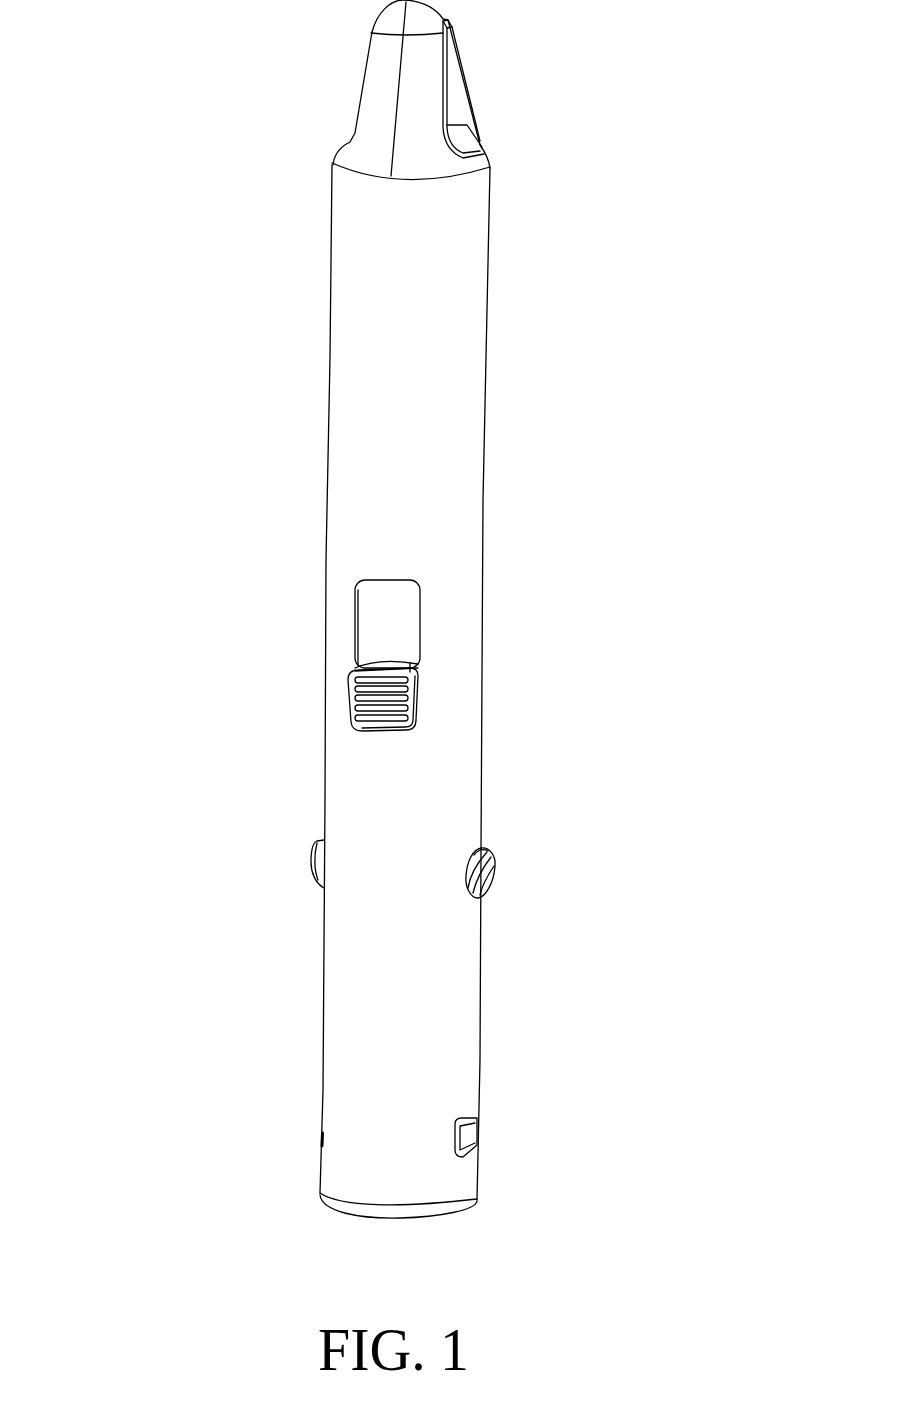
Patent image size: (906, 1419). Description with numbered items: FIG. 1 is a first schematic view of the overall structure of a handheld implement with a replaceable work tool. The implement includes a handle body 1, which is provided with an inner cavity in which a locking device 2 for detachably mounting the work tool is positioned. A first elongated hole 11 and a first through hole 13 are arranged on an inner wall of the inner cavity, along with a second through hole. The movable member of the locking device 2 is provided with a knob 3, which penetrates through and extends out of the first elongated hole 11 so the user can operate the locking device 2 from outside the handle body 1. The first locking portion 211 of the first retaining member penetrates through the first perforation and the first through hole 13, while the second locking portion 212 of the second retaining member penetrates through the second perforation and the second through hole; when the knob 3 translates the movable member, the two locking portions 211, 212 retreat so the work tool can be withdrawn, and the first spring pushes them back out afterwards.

The handle body 1 is at (330, 358).
The first elongated hole 11 is at (355, 605).
The locking device 2 is at (380, 662).
The knob 3 is at (357, 692).
The first locking portion 211 is at (317, 858).
The second locking portion 212 is at (492, 857).
The first through hole 13 is at (480, 845).